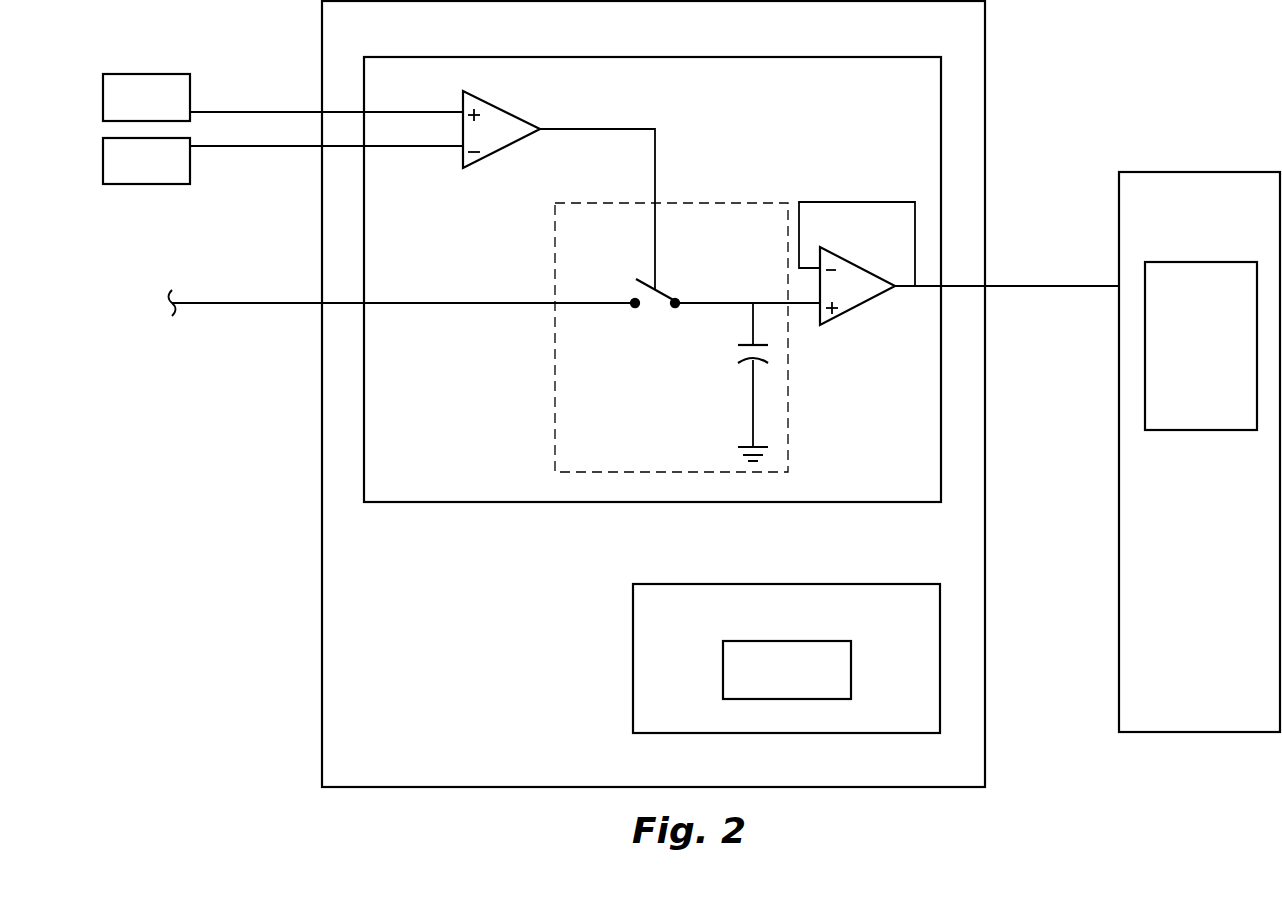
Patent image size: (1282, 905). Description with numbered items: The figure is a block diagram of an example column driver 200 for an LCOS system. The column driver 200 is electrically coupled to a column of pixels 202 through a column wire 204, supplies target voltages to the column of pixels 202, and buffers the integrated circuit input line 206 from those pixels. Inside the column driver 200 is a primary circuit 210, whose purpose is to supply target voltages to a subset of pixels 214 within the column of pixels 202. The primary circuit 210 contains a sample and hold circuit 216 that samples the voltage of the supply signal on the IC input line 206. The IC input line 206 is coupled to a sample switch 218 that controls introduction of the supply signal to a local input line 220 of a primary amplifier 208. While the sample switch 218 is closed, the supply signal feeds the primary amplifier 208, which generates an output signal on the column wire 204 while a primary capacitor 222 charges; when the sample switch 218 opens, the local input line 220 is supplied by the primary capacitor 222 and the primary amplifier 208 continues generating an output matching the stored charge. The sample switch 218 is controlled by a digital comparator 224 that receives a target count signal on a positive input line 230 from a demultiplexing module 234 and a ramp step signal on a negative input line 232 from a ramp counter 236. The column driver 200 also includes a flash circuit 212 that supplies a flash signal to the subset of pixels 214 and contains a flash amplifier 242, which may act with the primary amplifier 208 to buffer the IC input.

The column driver 200 is at (978, 34).
The column of pixels 202 is at (1218, 211).
The column wire 204 is at (1080, 283).
The integrated circuit input line 206 is at (286, 299).
The primary amplifier 208 is at (845, 325).
The primary circuit 210 is at (931, 88).
The flash circuit 212 is at (805, 614).
The subset of pixels 214 is at (1218, 302).
The sample and hold circuit 216 is at (780, 233).
The sample switch 218 is at (657, 292).
The local input line 220 is at (711, 298).
The primary capacitor 222 is at (770, 353).
The digital comparator 224 is at (462, 101).
The positive input line 230 is at (288, 108).
The negative input line 232 is at (288, 150).
The demultiplexing module 234 is at (163, 110).
The ramp counter 236 is at (163, 174).
The flash amplifier 242 is at (805, 676).